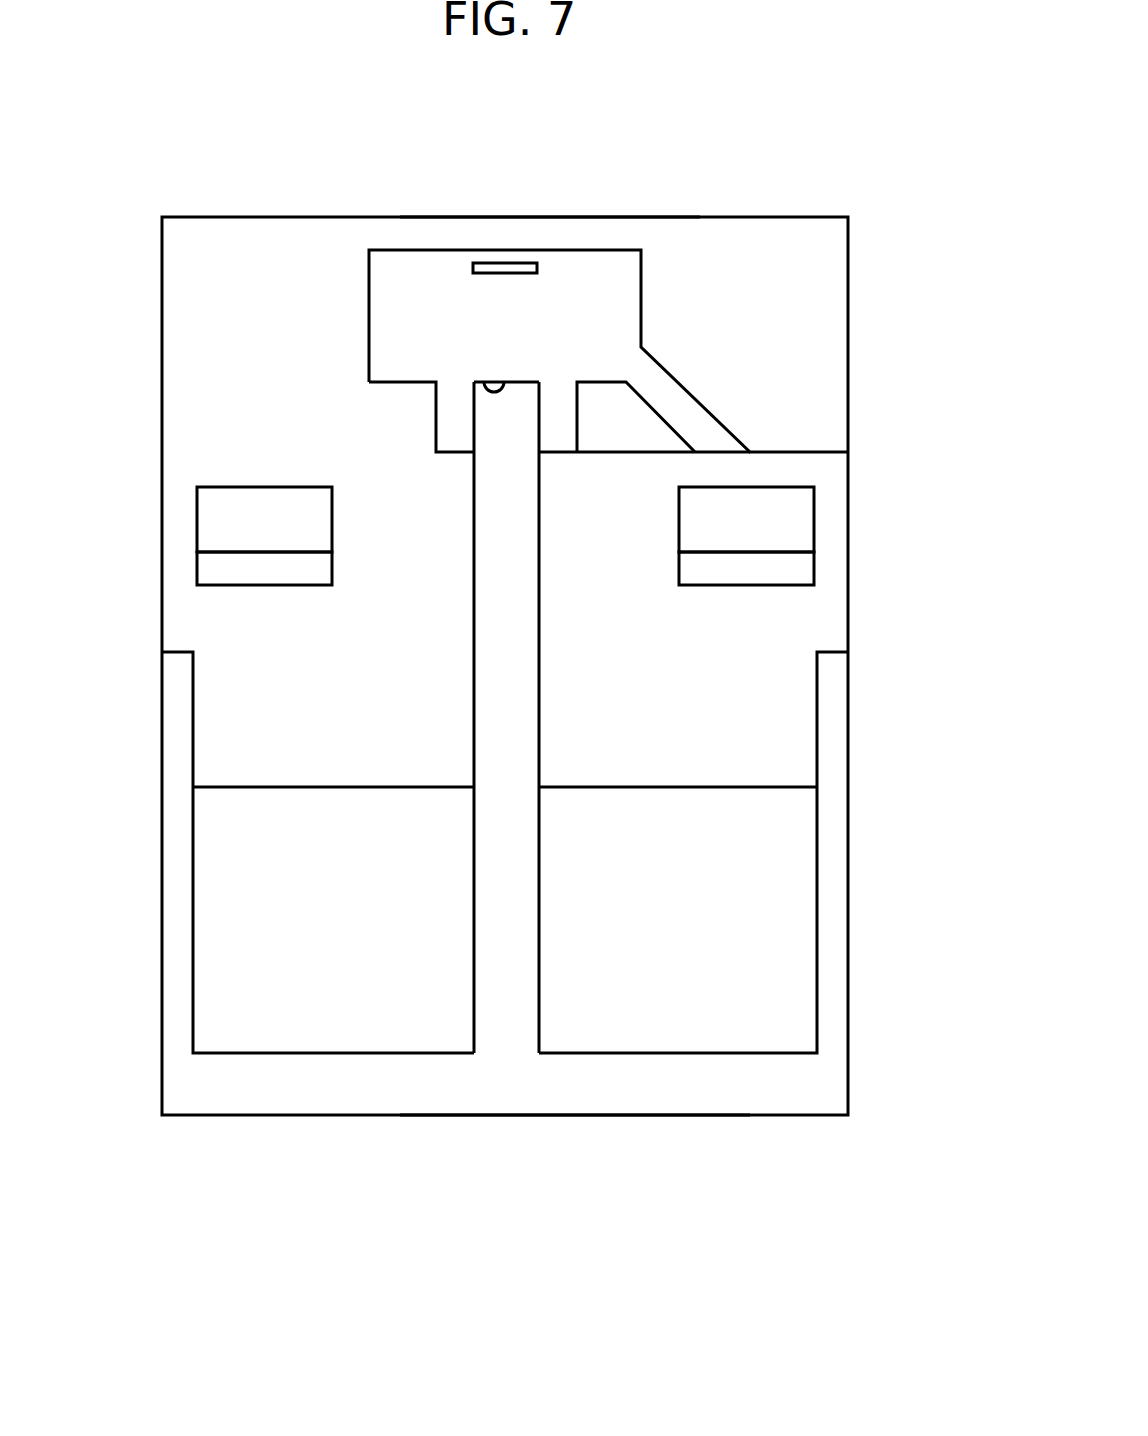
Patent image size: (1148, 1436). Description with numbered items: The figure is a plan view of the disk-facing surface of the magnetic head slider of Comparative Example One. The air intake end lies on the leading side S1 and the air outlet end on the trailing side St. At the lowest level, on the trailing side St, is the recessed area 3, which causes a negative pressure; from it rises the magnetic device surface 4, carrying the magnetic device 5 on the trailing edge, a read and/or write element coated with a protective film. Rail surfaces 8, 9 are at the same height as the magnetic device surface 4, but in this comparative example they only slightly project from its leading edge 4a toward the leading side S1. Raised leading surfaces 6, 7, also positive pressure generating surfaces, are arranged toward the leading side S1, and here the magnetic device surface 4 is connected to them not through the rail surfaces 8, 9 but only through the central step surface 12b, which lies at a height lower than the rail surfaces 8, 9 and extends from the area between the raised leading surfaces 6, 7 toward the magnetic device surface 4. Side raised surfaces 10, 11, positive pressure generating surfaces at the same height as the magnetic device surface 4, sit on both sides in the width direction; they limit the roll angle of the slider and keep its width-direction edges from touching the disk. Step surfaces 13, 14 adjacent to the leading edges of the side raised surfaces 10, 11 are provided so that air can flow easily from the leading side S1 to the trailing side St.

The recessed area 3 is at (822, 343).
The magnetic device surface 4 is at (594, 299).
The leading edge of magnetic device surface 4a is at (486, 382).
The magnetic device 5 is at (515, 262).
The trailing side St is at (532, 216).
The rail surface 8 is at (457, 415).
The rail surface 9 is at (553, 428).
The side raised surface 10 is at (222, 516).
The step surface 13 is at (210, 574).
The side raised surface 11 is at (792, 522).
The step surface 14 is at (798, 573).
The raised leading surface 6 is at (282, 1023).
The raised leading surface 7 is at (726, 1027).
The central step surface 12b is at (503, 988).
The leading side S1 is at (608, 1117).